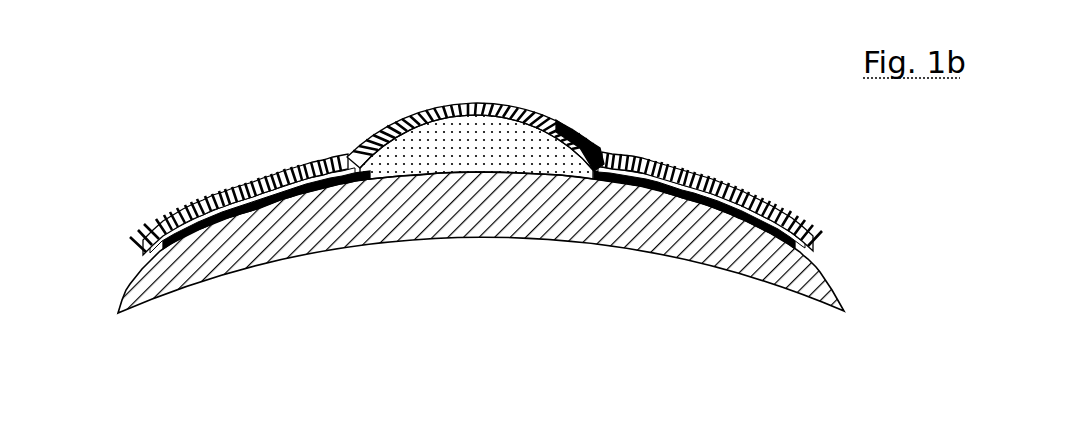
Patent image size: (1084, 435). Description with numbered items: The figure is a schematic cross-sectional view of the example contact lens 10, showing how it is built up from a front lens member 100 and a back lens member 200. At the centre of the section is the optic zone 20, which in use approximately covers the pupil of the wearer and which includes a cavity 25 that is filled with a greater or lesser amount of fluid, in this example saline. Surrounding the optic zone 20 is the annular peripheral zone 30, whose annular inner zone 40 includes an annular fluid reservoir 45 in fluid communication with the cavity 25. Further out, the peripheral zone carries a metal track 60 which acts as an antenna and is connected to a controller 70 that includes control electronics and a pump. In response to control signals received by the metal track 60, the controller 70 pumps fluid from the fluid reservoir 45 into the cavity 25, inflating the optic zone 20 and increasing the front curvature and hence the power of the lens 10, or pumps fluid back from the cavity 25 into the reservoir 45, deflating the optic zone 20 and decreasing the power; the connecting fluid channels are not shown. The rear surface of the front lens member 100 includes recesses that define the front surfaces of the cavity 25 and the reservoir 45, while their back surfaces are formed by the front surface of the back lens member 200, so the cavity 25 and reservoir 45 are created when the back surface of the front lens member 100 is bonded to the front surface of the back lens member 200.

The contact lens 10 is at (113, 368).
The optic zone 20 is at (476, 88).
The cavity 25 is at (422, 133).
The annular peripheral zone 30 is at (296, 298).
The annular inner zone 40 is at (297, 115).
The annular fluid reservoir 45 is at (287, 180).
The metal track 60 is at (165, 222).
The controller 70 is at (318, 193).
The front lens member 100 is at (228, 185).
The back lens member 200 is at (485, 220).